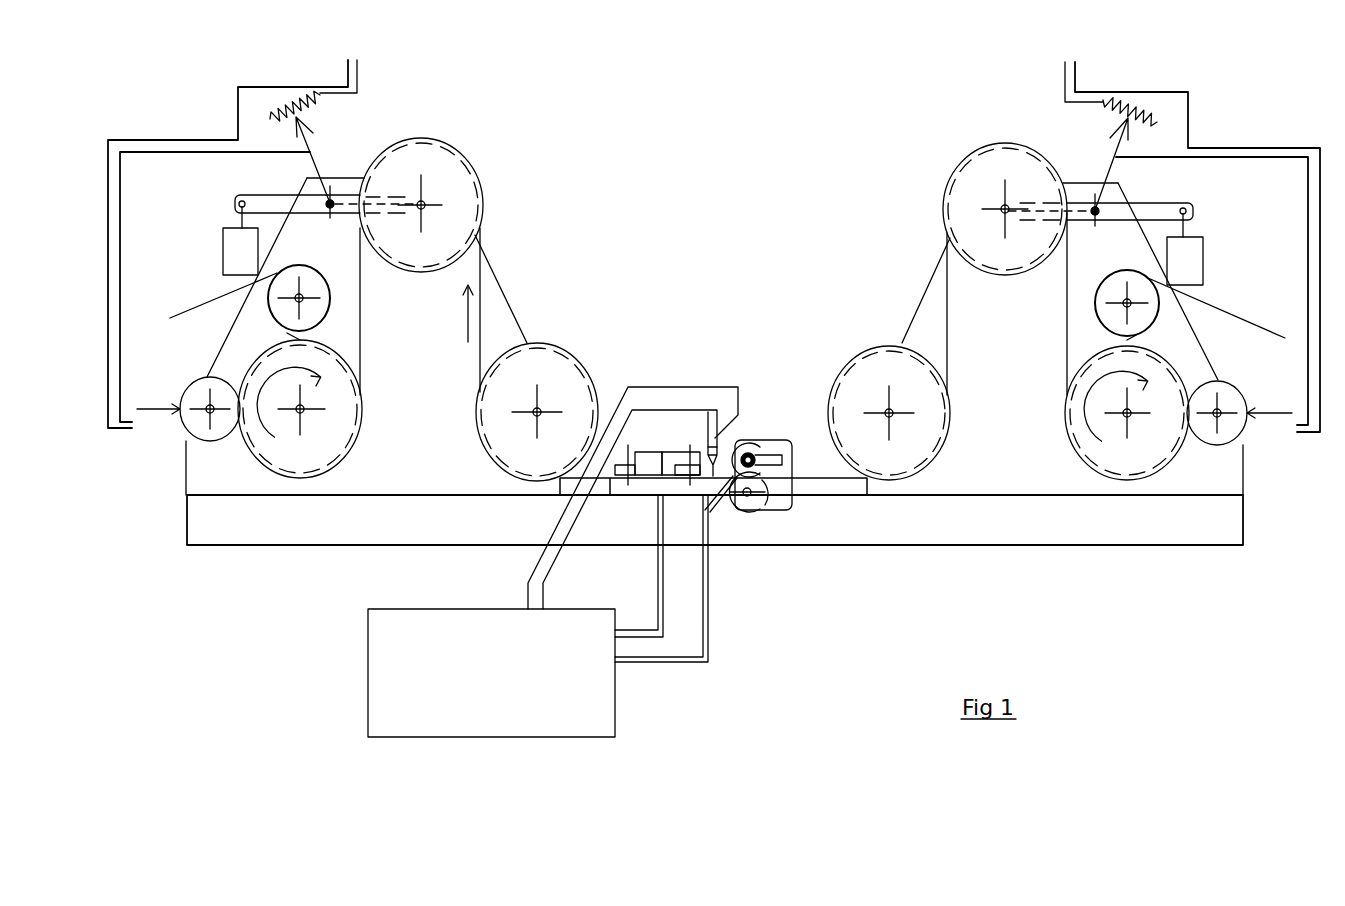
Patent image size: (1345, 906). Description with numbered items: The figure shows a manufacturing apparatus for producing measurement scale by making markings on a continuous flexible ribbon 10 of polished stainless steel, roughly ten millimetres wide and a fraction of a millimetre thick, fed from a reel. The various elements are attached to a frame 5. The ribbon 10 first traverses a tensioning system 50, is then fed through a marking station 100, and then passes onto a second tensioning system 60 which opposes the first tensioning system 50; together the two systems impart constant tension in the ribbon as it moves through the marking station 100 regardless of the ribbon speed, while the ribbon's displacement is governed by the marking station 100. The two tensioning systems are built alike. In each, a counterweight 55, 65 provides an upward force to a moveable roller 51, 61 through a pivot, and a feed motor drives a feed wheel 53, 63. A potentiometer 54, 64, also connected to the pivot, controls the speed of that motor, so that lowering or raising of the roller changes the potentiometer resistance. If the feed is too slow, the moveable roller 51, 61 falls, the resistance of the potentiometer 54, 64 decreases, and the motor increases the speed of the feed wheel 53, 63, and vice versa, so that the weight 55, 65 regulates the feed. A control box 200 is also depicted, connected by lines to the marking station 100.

The frame 5 is at (367, 478).
The ribbon 10 is at (497, 290).
The tensioning system 50 is at (927, 137).
The moveable roller 51 is at (1018, 168).
The feed wheel 53 is at (1080, 388).
The potentiometer 54 is at (1148, 105).
The counterweight 55 is at (1192, 252).
The tensioning system 60 is at (505, 139).
The moveable roller 61 is at (422, 157).
The feed wheel 63 is at (348, 440).
The potentiometer 64 is at (273, 103).
The counterweight 65 is at (240, 247).
The marking station 100 is at (721, 356).
The control unit 200 is at (590, 714).